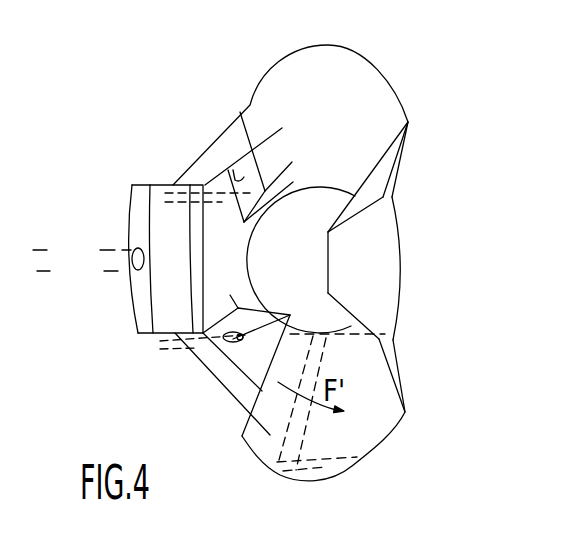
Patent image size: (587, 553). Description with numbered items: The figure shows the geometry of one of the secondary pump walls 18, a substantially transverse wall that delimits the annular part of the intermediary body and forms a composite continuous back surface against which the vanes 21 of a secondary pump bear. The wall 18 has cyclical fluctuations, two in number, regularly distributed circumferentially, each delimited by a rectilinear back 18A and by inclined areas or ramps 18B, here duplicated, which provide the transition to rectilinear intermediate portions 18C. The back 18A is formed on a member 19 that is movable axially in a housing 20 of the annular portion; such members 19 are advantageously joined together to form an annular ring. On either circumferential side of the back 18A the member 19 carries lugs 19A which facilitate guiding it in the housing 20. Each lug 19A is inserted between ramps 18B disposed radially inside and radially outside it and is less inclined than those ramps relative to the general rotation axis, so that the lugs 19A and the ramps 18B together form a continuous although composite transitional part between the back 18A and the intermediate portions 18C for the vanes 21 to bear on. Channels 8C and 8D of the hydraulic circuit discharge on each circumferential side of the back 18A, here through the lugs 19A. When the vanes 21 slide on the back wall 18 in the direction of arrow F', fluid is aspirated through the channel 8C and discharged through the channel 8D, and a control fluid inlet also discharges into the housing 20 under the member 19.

The secondary pump wall 18 is at (408, 59).
The rectilinear back 18A is at (386, 278).
The ramp 18B is at (215, 145).
The rectilinear intermediate portion 18C is at (345, 86).
The member 19 is at (140, 309).
The lug 19A is at (231, 230).
The housing 20 is at (132, 204).
The vane 21 is at (338, 466).
The channel 8C is at (185, 180).
The channel 8D is at (178, 348).